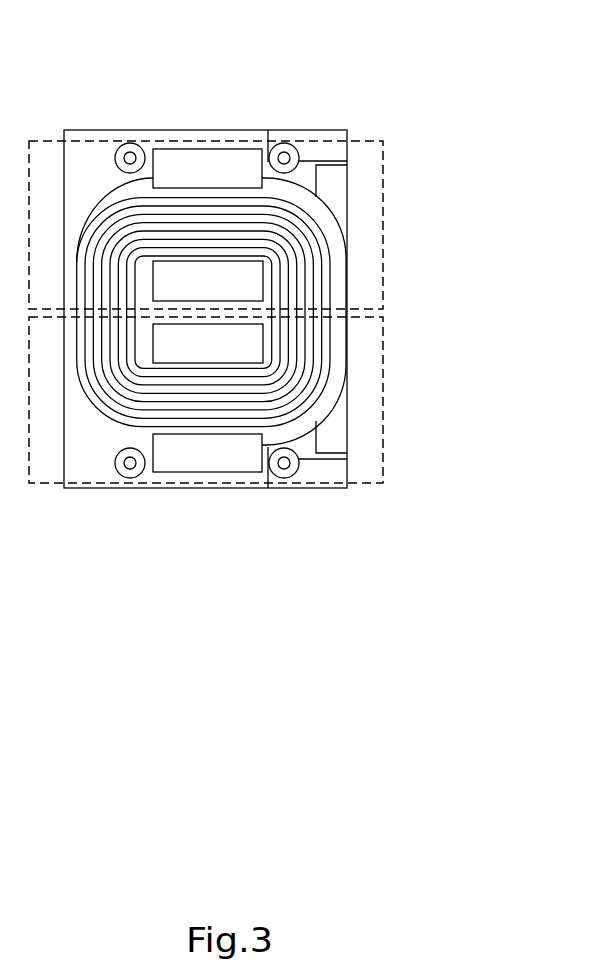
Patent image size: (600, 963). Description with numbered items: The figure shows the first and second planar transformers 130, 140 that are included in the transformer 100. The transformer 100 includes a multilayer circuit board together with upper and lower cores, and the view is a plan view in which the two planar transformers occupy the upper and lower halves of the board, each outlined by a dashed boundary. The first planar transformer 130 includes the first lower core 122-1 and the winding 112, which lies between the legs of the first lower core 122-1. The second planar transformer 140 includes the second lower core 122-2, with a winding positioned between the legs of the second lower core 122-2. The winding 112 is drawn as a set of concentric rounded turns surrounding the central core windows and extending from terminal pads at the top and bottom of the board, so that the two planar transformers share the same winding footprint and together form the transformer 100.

The transformer 100 is at (88, 47).
The winding 112 is at (325, 297).
The first lower core 122-1 is at (207, 167).
The second lower core 122-2 is at (210, 457).
The first planar transformer 130 is at (384, 221).
The second planar transformer 140 is at (384, 398).